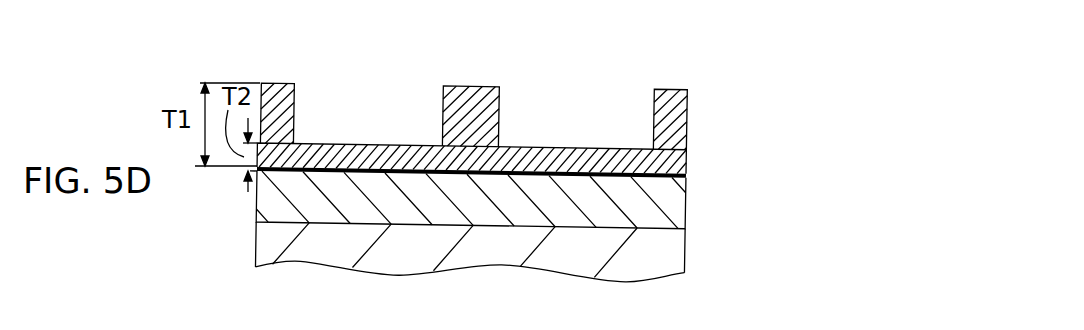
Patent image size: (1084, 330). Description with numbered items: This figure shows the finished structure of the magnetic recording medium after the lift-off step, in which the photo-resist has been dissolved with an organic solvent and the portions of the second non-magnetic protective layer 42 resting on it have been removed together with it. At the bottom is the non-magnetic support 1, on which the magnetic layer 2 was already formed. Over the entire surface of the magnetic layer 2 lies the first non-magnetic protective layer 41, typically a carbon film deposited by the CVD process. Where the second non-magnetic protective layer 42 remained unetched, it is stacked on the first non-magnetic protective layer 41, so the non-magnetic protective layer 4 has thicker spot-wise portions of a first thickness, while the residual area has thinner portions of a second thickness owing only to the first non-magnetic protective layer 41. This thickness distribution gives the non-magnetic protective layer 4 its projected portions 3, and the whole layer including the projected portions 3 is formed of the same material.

The non-magnetic support 1 is at (667, 258).
The magnetic layer 2 is at (667, 207).
The projected portions 3 is at (498, 88).
The non-magnetic protective layer 4 is at (520, 148).
The first non-magnetic protective layer 41 is at (673, 164).
The second non-magnetic protective layer 42 is at (670, 124).